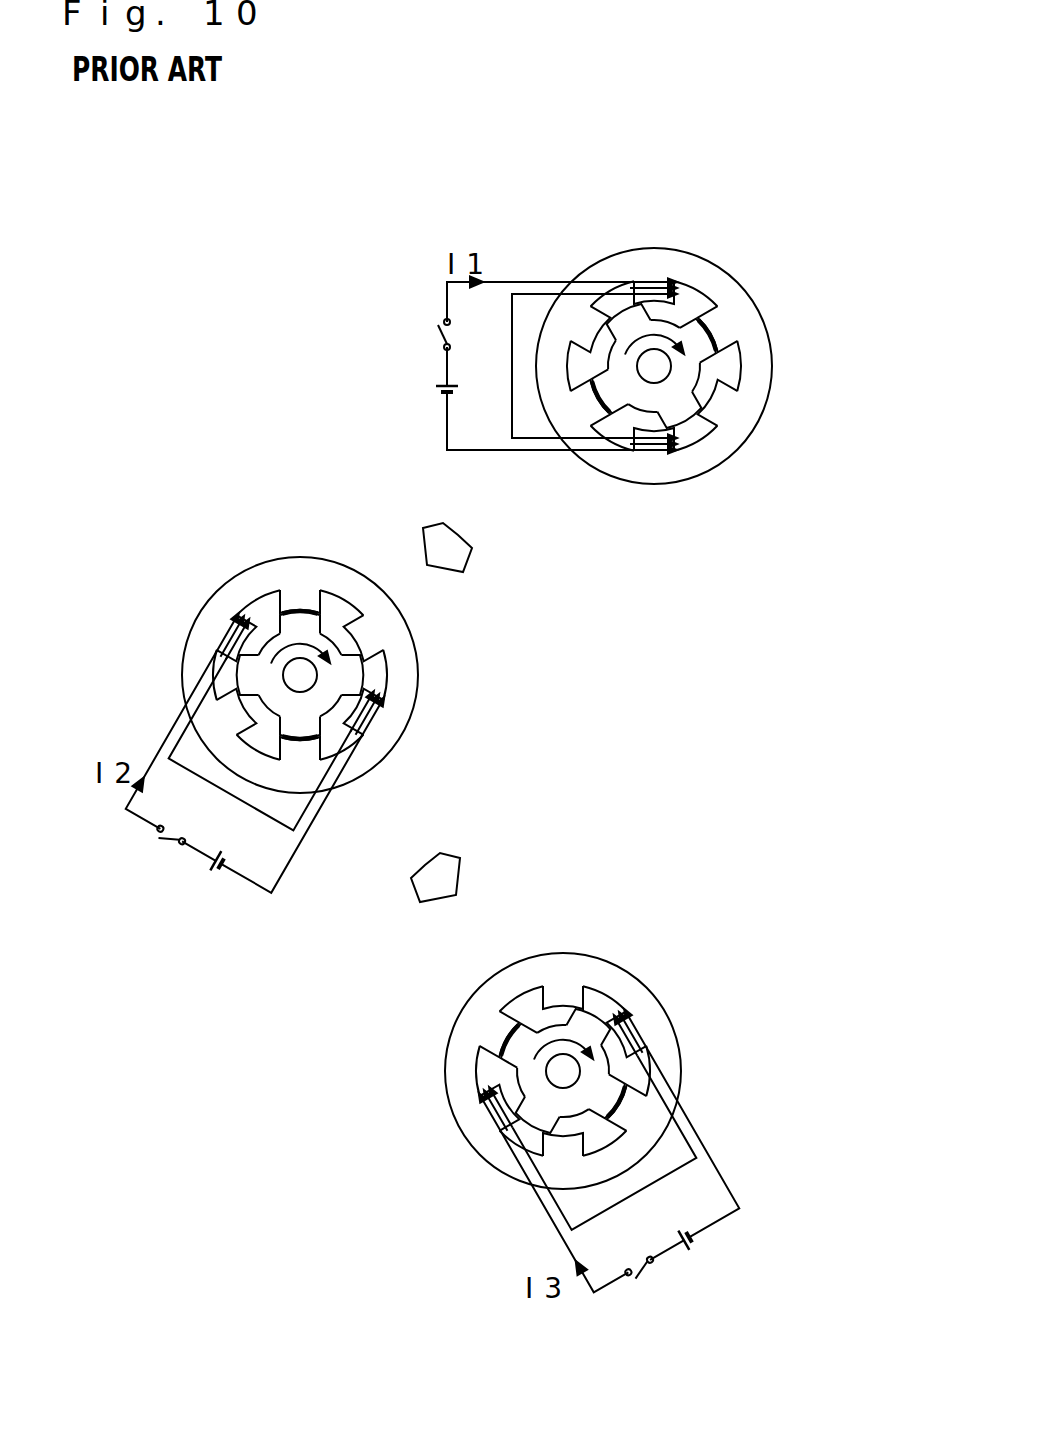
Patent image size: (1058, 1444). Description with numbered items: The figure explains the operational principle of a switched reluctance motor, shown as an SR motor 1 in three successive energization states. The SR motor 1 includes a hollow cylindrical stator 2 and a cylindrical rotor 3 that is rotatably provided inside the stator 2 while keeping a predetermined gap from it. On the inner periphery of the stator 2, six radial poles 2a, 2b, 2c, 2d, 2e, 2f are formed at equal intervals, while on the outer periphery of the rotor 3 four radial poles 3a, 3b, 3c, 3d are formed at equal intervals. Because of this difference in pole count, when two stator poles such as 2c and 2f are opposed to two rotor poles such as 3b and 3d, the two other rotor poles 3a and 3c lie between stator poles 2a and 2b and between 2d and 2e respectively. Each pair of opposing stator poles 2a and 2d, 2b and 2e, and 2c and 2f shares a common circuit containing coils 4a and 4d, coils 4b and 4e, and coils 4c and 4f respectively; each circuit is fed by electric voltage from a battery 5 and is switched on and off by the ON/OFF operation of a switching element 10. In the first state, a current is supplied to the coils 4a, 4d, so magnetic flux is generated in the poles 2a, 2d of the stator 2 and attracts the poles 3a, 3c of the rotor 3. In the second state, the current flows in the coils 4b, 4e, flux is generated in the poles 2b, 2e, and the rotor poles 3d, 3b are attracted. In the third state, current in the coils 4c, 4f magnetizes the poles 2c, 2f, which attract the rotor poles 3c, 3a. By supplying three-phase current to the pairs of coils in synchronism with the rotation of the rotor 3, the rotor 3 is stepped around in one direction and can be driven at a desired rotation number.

The SR motor 1 is at (512, 192).
The stator 2 is at (707, 270).
The radial pole of the stator 2a is at (668, 278).
The radial pole of the stator 2b is at (586, 327).
The radial pole of the stator 2c is at (584, 416).
The radial pole of the stator 2d is at (670, 456).
The radial pole of the stator 2e is at (727, 405).
The radial pole of the stator 2f is at (722, 326).
The rotor 3 is at (638, 400).
The radial pole of the rotor 3a is at (620, 310).
The radial pole of the rotor 3b is at (714, 340).
The radial pole of the rotor 3c is at (688, 420).
The radial pole of the rotor 3d is at (603, 382).
The coil 4a is at (633, 278).
The coil 4b is at (233, 623).
The coil 4c is at (496, 1132).
The coil 4d is at (640, 458).
The coil 4e is at (380, 712).
The coil 4f is at (639, 1027).
The battery 5 is at (437, 390).
The switching element 10 is at (438, 328).